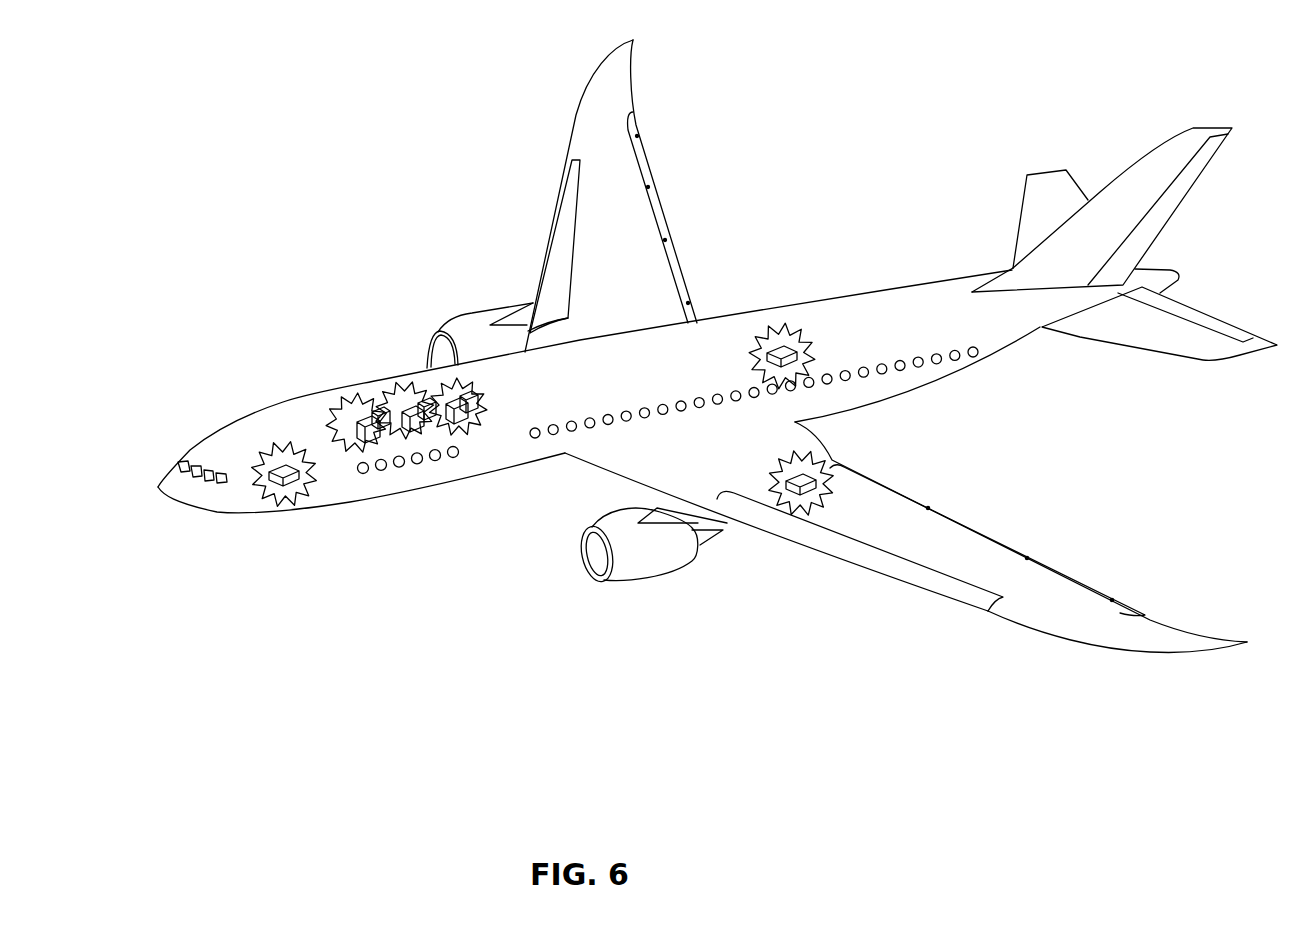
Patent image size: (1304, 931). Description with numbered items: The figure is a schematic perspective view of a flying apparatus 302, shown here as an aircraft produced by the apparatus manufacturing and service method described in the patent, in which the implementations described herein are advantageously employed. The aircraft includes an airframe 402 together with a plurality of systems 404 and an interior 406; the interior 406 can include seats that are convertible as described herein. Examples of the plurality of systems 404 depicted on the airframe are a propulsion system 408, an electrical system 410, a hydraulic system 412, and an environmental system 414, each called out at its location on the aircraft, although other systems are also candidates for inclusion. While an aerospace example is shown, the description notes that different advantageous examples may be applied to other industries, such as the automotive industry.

The flying apparatus 302 is at (318, 118).
The airframe 402 is at (491, 548).
The plurality of systems 404 is at (883, 248).
The interior 406 is at (367, 407).
The propulsion system 408 is at (468, 322).
The electrical system 410 is at (285, 450).
The hydraulic system 412 is at (808, 468).
The environmental system 414 is at (782, 330).